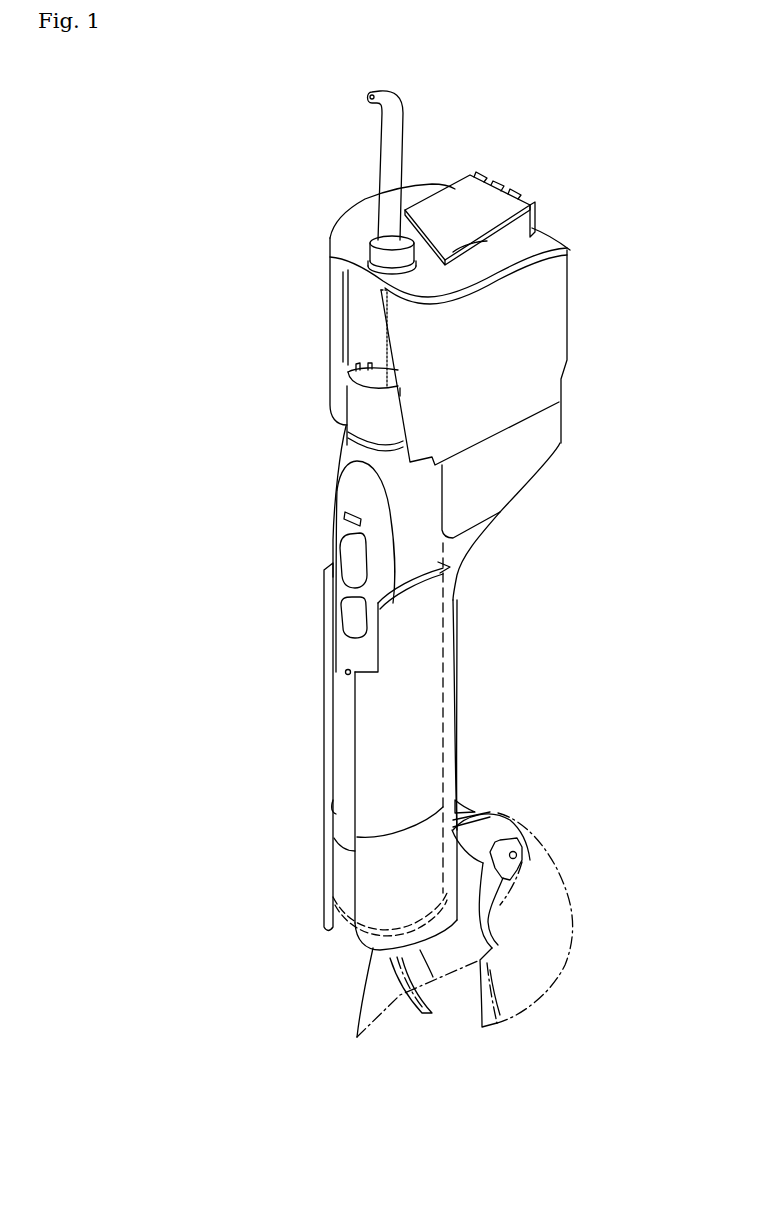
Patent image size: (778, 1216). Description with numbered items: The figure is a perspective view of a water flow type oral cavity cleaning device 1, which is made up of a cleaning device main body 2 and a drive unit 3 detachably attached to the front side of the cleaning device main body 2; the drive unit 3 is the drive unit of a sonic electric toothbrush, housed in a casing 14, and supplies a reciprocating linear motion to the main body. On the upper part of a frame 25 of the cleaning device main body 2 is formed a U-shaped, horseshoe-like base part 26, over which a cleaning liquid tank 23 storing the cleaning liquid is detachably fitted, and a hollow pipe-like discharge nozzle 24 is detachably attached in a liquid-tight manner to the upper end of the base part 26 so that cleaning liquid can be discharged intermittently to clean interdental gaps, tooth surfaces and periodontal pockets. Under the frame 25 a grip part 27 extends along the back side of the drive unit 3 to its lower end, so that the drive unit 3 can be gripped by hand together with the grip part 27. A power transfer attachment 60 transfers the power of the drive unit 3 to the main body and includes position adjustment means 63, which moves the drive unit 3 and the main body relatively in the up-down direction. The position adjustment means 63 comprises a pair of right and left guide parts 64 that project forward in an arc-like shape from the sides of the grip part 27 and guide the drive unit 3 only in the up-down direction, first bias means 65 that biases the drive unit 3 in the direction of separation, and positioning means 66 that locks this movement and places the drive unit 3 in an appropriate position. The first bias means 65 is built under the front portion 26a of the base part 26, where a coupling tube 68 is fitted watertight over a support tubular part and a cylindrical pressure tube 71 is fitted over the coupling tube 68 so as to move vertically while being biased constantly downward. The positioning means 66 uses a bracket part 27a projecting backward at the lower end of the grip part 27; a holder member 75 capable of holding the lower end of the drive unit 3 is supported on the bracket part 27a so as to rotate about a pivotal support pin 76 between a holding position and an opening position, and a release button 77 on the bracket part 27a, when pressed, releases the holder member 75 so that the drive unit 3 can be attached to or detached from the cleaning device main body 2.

The water flow type oral cavity cleaning device 1 is at (565, 120).
The cleaning device main body 2 is at (587, 294).
The drive unit 3 is at (318, 748).
The casing 14 is at (340, 893).
The cleaning liquid tank 23 is at (542, 337).
The discharge nozzle 24 is at (390, 145).
The frame 25 is at (520, 681).
The base part 26 is at (517, 473).
The front portion of the base part 26a is at (353, 318).
The grip part 27 is at (457, 655).
The bracket part 27a is at (490, 812).
The power transfer attachment 60 is at (303, 820).
The position adjustment means 63 is at (442, 731).
The guide parts 64 is at (368, 713).
The first bias means 65 is at (325, 450).
The positioning means 66 is at (537, 830).
The coupling tube 68 is at (353, 383).
The pressure tube 71 is at (353, 415).
The holder member 75 is at (397, 993).
The pivotal support pin 76 is at (528, 862).
The release button 77 is at (462, 800).